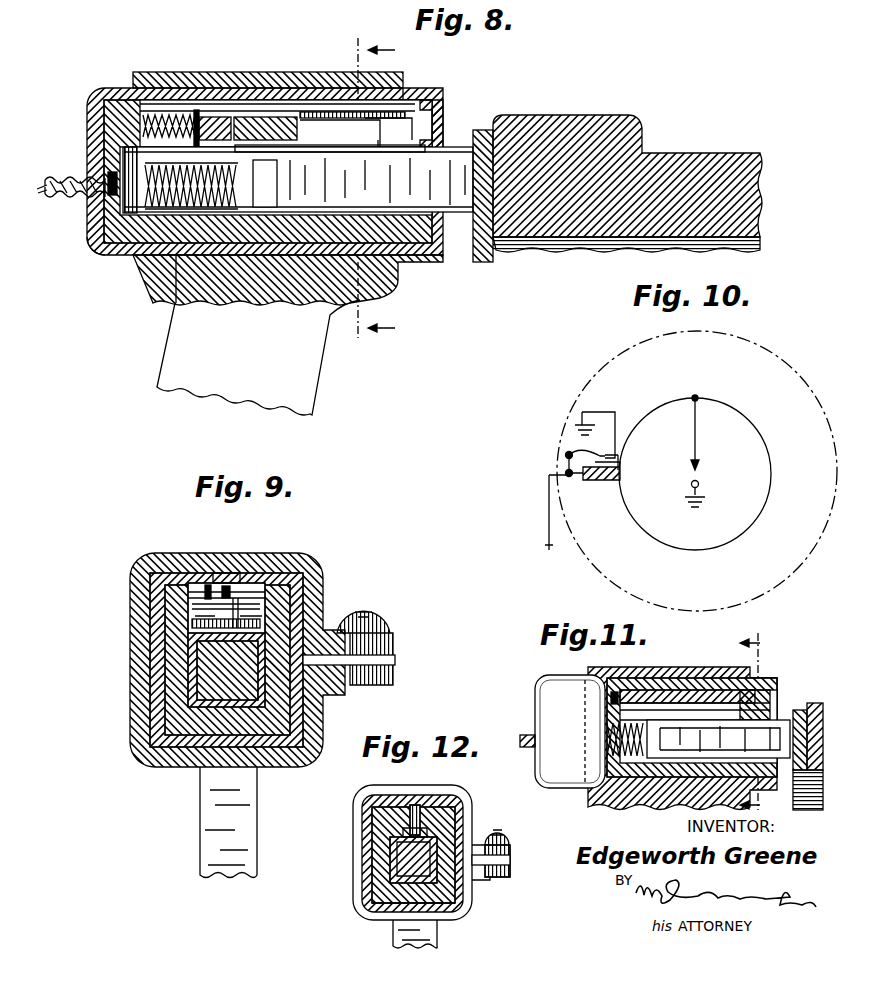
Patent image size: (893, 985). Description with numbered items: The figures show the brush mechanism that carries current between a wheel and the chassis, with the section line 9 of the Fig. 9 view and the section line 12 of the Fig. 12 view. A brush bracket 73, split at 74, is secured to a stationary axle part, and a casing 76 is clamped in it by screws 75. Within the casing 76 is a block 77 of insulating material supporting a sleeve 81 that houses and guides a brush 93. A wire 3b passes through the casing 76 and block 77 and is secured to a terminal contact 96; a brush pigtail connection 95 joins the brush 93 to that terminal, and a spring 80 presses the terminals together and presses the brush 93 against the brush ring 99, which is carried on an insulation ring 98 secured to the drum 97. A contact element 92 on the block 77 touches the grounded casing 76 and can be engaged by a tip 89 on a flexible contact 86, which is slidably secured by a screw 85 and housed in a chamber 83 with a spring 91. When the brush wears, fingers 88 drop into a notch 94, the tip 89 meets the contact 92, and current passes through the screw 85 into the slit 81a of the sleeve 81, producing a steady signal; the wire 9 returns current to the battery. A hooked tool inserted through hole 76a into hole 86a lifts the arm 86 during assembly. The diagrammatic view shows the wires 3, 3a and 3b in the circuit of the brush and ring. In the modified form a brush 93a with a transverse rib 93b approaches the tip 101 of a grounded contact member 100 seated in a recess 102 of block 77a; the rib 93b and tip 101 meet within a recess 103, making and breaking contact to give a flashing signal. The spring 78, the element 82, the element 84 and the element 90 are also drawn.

In FIG. 10, the wire 3 is at (765, 356).
In FIG. 10, the wire 3a is at (702, 477).
In FIG. 8, the wire 3b is at (47, 191).
In FIG. 10, the wire 3b is at (547, 535).
In FIG. 8, the wire 9 is at (365, 193).
In FIG. 11, the section line 12 is at (767, 723).
In FIG. 8, the brush bracket 73 is at (275, 300).
In FIG. 9, the brush bracket 73 is at (135, 705).
In FIG. 12, the brush bracket 73 is at (473, 907).
In FIG. 11, the brush bracket 73 is at (590, 668).
In FIG. 9, the split 74 is at (396, 660).
In FIG. 9, the screws 75 is at (376, 622).
In FIG. 12, the screws 75 is at (508, 836).
In FIG. 8, the casing 76 is at (90, 112).
In FIG. 9, the casing 76 is at (142, 630).
In FIG. 12, the casing 76 is at (364, 850).
In FIG. 11, the casing 76 is at (570, 731).
In FIG. 8, the hole 76a is at (400, 90).
In FIG. 9, the hole 76a is at (218, 574).
In FIG. 8, the block 77 is at (100, 205).
In FIG. 9, the block 77 is at (160, 595).
In FIG. 12, the block 77a is at (382, 825).
In FIG. 11, the block 77a is at (618, 778).
In FIG. 8, the compression spring 78 is at (165, 222).
In FIG. 8, the spring 80 is at (172, 282).
In FIG. 8, the sleeve 81 is at (183, 262).
In FIG. 9, the sleeve 81 is at (145, 728).
In FIG. 8, the slit 81a is at (178, 112).
In FIG. 8, the contact plate 82 is at (346, 152).
In FIG. 9, the contact plate 82 is at (288, 609).
In FIG. 8, the chamber 83 is at (290, 104).
In FIG. 9, the chamber 83 is at (272, 580).
In FIG. 8, the contact block 84 is at (258, 117).
In FIG. 9, the contact block 84 is at (292, 596).
In FIG. 8, the screw 85 is at (227, 117).
In FIG. 10, the screw 85 is at (560, 465).
In FIG. 9, the screw 85 is at (226, 586).
In FIG. 8, the flexible contact 86 is at (318, 112).
In FIG. 10, the flexible contact 86 is at (566, 453).
In FIG. 9, the flexible contact 86 is at (206, 586).
In FIG. 9, the hole 86a is at (238, 596).
In FIG. 8, the fingers 88 is at (378, 135).
In FIG. 8, the tip 89 is at (408, 118).
In FIG. 8, the pin 90 is at (196, 112).
In FIG. 8, the spring 91 is at (152, 112).
In FIG. 8, the contact element 92 is at (444, 112).
In FIG. 10, the contact element 92 is at (620, 428).
In FIG. 8, the brush 93 is at (299, 179).
In FIG. 10, the brush 93 is at (608, 481).
In FIG. 9, the brush 93 is at (200, 668).
In FIG. 12, the brush 93a is at (385, 892).
In FIG. 11, the brush 93a is at (718, 739).
In FIG. 12, the transverse rib 93b is at (395, 858).
In FIG. 11, the transverse rib 93b is at (665, 710).
In FIG. 8, the notch 94 is at (276, 183).
In FIG. 8, the brush pigtail connection 95 is at (94, 250).
In FIG. 8, the terminal contact 96 is at (122, 170).
In FIG. 8, the drum 97 is at (672, 155).
In FIG. 8, the insulation ring 98 is at (500, 220).
In FIG. 11, the insulation ring 98 is at (639, 492).
In FIG. 8, the brush ring 99 is at (488, 130).
In FIG. 10, the brush ring 99 is at (702, 549).
In FIG. 11, the brush ring 99 is at (813, 718).
In FIG. 12, the contact member 100 is at (416, 806).
In FIG. 11, the contact member 100 is at (616, 693).
In FIG. 12, the tip 101 is at (420, 830).
In FIG. 11, the tip 101 is at (772, 700).
In FIG. 11, the recess 102 is at (768, 690).
In FIG. 12, the recess 103 is at (428, 840).
In FIG. 11, the recess 103 is at (715, 705).